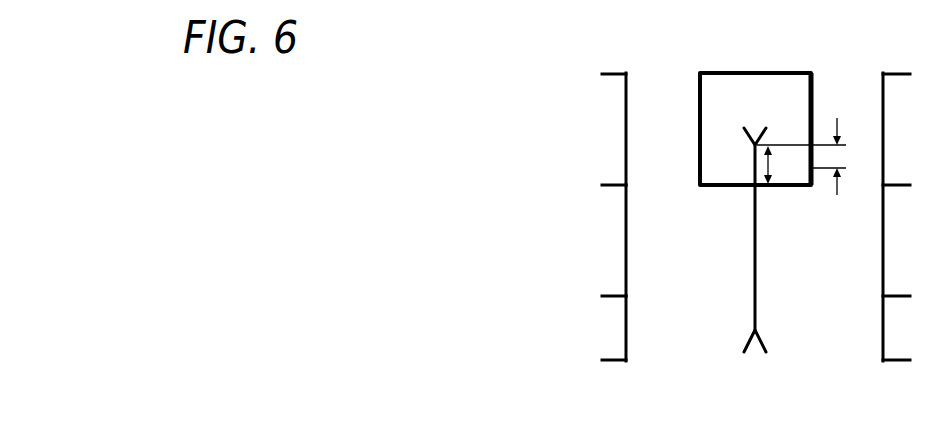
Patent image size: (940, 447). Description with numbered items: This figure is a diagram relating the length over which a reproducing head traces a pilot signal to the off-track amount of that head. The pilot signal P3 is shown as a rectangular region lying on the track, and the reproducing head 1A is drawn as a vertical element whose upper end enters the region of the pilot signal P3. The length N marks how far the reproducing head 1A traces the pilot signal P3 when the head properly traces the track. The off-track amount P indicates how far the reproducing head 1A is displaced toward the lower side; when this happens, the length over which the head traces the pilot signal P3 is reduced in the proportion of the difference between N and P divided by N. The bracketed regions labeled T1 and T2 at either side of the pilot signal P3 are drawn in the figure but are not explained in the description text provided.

The pilot signal P3 is at (748, 72).
The second track region T2 is at (628, 132).
The first track region T1 is at (628, 215).
The reproducing head 1A is at (755, 222).
The length in which the reproducing head traces the pilot signal N is at (801, 164).
The off-track amount P is at (836, 156).